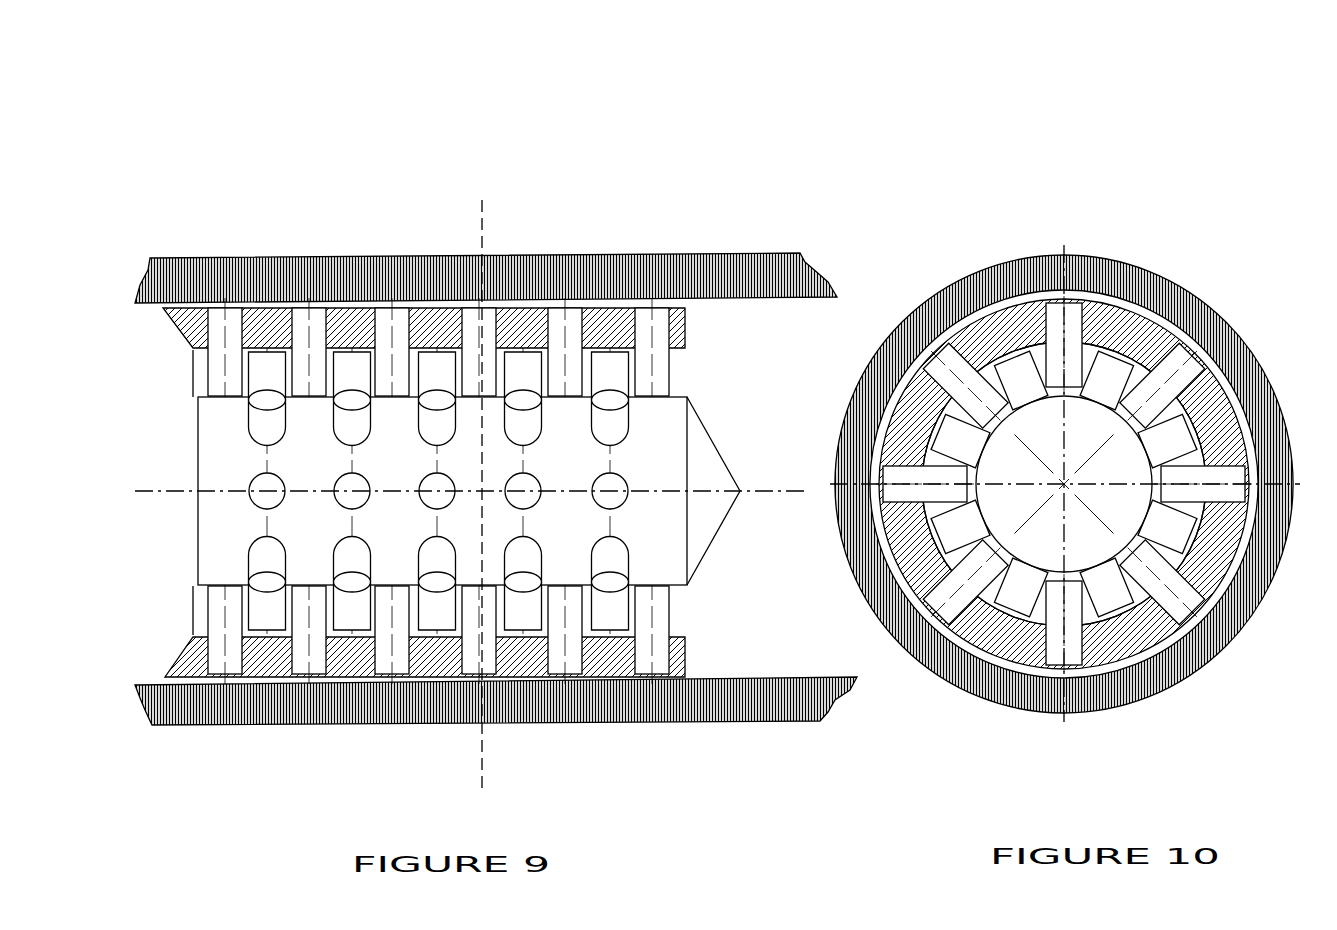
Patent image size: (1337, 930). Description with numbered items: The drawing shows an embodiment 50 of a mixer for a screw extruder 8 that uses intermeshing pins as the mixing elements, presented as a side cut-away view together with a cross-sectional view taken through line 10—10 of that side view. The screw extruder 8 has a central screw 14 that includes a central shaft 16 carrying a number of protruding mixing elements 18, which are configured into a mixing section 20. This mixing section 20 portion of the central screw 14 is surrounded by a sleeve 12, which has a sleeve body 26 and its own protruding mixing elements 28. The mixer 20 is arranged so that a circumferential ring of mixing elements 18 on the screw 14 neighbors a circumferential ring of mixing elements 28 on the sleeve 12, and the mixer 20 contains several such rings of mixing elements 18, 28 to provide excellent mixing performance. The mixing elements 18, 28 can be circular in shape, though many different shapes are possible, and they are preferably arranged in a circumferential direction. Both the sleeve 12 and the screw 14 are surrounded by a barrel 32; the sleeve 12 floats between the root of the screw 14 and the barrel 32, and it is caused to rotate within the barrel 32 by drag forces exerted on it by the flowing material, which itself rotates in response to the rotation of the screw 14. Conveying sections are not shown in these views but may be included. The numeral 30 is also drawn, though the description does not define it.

In FIG. 10, the screw extruder 8 is at (815, 172).
In FIG. 10, the embodiment of mixer 50 is at (935, 180).
In FIG. 9, the line 10— 10 is at (560, 190).
In FIG. 9, the sleeve 12 is at (685, 338).
In FIG. 10, the sleeve 12 is at (912, 418).
In FIG. 9, the central screw 14 is at (733, 437).
In FIG. 10, the central screw 14 is at (985, 450).
In FIG. 9, the central shaft 16 is at (676, 490).
In FIG. 10, the central shaft 16 is at (1003, 500).
In FIG. 9, the mixing elements 18 is at (620, 422).
In FIG. 10, the mixing elements 18 is at (943, 435).
In FIG. 9, the mixing section 20 is at (393, 232).
In FIG. 9, the sleeve body 26 is at (705, 670).
In FIG. 10, the sleeve body 26 is at (915, 252).
In FIG. 9, the mixing elements 28 is at (672, 640).
In FIG. 10, the mixing elements 28 is at (955, 583).
In FIG. 9, the stator pole magnets 30 is at (250, 557).
In FIG. 9, the barrel 32 is at (792, 270).
In FIG. 10, the barrel 32 is at (1064, 482).